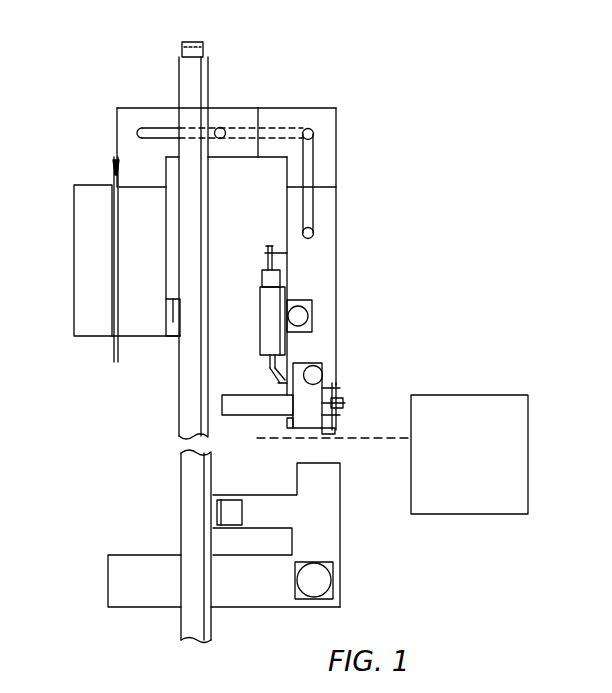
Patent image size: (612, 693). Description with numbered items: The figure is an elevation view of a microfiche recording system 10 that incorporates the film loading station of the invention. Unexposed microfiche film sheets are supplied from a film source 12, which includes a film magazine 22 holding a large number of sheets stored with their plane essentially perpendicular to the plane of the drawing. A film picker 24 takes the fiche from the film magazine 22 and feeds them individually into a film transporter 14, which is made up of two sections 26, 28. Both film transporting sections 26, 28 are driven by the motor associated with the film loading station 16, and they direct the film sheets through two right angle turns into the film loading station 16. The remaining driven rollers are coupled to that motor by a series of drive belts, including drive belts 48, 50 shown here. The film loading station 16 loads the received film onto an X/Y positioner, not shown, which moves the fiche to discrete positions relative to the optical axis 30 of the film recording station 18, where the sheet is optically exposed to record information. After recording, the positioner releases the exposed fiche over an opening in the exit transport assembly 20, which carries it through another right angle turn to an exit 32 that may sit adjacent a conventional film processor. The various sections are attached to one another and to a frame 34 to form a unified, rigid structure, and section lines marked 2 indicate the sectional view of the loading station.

The microfiche recording system 10 is at (402, 178).
The film source 12 is at (68, 358).
The film transporter 14 is at (266, 94).
The film loading station 16 is at (353, 342).
The film recording station 18 is at (463, 395).
The exit transport assembly 20 is at (345, 556).
The film magazine 22 is at (75, 236).
The film picker 24 is at (126, 328).
The film transporting section 26 is at (120, 111).
The film transporting section 28 is at (297, 108).
The optical axis 30 is at (352, 438).
The exit 32 is at (108, 588).
The frame 34 is at (202, 640).
The drive belt 48 is at (313, 160).
The drive belt 50 is at (210, 128).
The section line 2- 2 is at (300, 253).